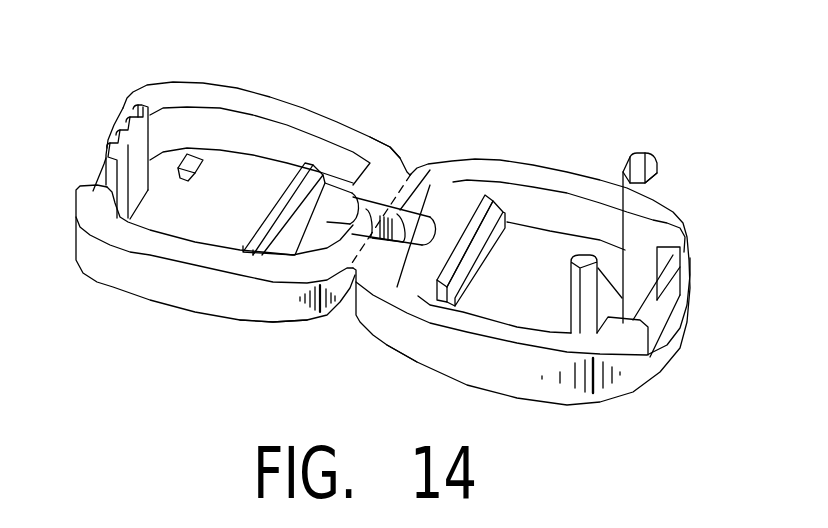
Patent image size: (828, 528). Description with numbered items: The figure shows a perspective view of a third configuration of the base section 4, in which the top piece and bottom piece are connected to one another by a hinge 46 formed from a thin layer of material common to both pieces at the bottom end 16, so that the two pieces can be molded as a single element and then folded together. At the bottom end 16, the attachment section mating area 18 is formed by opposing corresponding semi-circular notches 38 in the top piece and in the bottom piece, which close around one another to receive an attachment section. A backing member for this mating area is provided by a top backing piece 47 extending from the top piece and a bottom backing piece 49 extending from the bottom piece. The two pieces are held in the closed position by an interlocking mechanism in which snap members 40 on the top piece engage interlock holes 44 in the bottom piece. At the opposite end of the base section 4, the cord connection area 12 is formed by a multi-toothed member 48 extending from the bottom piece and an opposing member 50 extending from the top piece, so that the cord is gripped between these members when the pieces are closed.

The base section 4 is at (512, 160).
The cord connection area 12 is at (152, 88).
The bottom end 16 is at (283, 322).
The attachment section mating area 18 is at (387, 147).
The semi-circular notches 38 is at (425, 210).
The snap members 40 is at (651, 160).
The interlock holes 44 is at (186, 182).
The hinge 46 is at (408, 173).
The top backing piece 47 is at (520, 220).
The multi-toothed member 48 is at (107, 153).
The bottom backing piece 49 is at (280, 187).
The opposing member 50 is at (623, 280).